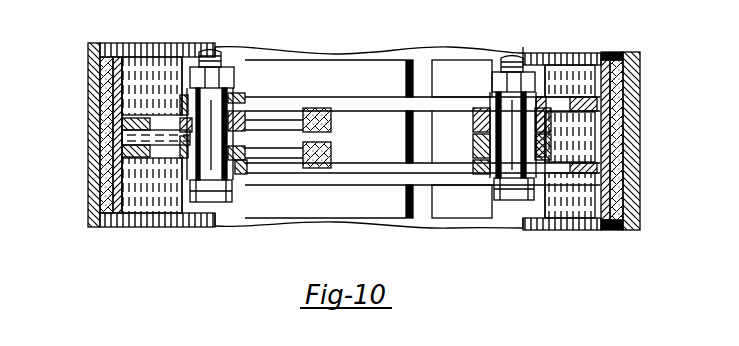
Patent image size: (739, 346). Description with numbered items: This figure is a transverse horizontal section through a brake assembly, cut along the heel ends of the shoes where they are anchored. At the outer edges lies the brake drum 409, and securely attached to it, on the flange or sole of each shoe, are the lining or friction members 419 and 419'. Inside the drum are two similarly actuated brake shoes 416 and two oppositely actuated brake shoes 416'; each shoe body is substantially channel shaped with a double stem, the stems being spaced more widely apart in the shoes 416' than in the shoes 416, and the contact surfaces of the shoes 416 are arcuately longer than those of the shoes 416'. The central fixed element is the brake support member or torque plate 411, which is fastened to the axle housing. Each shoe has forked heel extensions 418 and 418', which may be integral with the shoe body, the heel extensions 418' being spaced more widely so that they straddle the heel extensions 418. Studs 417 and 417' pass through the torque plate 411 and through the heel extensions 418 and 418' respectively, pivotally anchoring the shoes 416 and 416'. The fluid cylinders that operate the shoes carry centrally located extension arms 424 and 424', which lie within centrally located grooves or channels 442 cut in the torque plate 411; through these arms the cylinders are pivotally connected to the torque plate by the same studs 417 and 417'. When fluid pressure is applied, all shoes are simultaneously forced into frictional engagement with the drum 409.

The brake drum 409 is at (631, 80).
The brake support member or torque plate 411 is at (483, 108).
The brake shoes 416 is at (157, 148).
The oppositely actuated brake shoes 416' is at (567, 150).
The studs 417 is at (513, 161).
The studs 417' is at (210, 155).
The heel extensions 418 is at (462, 139).
The heel extensions 418' is at (422, 139).
The lining or friction members 419 is at (68, 135).
The lining or friction members 419' is at (644, 141).
The extension arms 424 is at (549, 111).
The extension arms 424' is at (169, 125).
The grooves or channels 442 is at (241, 176).